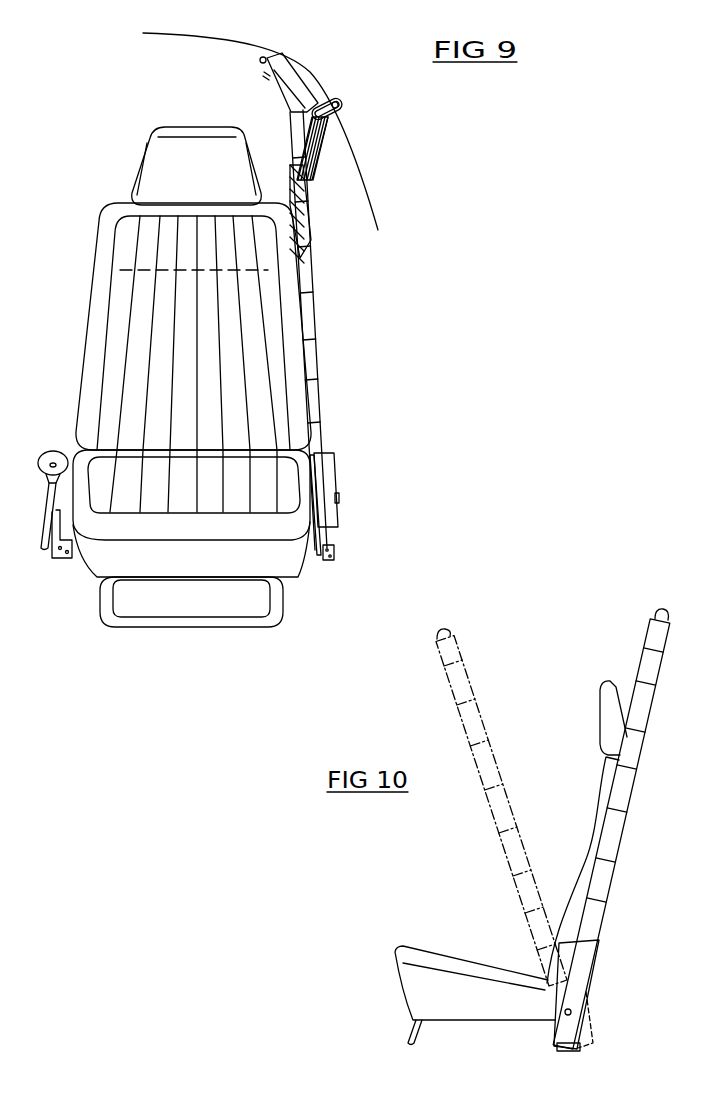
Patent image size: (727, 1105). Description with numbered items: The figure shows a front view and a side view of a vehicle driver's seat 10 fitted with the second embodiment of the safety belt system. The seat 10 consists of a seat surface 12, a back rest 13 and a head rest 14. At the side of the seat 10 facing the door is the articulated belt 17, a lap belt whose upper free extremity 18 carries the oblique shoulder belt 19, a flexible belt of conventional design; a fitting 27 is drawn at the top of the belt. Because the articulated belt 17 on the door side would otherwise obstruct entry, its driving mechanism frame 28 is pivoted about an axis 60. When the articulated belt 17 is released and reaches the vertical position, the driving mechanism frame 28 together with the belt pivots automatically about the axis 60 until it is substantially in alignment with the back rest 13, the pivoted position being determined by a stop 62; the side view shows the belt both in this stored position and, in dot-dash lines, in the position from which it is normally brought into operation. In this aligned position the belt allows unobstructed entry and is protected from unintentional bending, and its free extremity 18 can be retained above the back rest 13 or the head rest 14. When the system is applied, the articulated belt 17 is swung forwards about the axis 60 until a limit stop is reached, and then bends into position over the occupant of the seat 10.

In FIG. 9, the seat 10 is at (91, 570).
In FIG. 10, the seat 10 is at (405, 1003).
In FIG. 9, the seat surface 12 is at (173, 530).
In FIG. 10, the seat surface 12 is at (467, 967).
In FIG. 9, the back rest 13 is at (120, 320).
In FIG. 10, the back rest 13 is at (607, 780).
In FIG. 9, the head rest 14 is at (163, 165).
In FIG. 10, the head rest 14 is at (610, 713).
In FIG. 9, the articulated belt 17 is at (322, 328).
In FIG. 10, the articulated belt 17 is at (470, 717).
In FIG. 9, the free extremity 18 is at (283, 90).
In FIG. 9, the oblique shoulder belt 19 is at (327, 143).
In FIG. 9, the upper anchor hook 27 is at (268, 58).
In FIG. 10, the upper anchor hook 27 is at (662, 612).
In FIG. 9, the driving mechanism frame 28 is at (330, 458).
In FIG. 10, the driving mechanism frame 28 is at (577, 953).
In FIG. 9, the axis 60 is at (338, 498).
In FIG. 10, the axis 60 is at (573, 1012).
In FIG. 10, the stop 62 is at (588, 997).